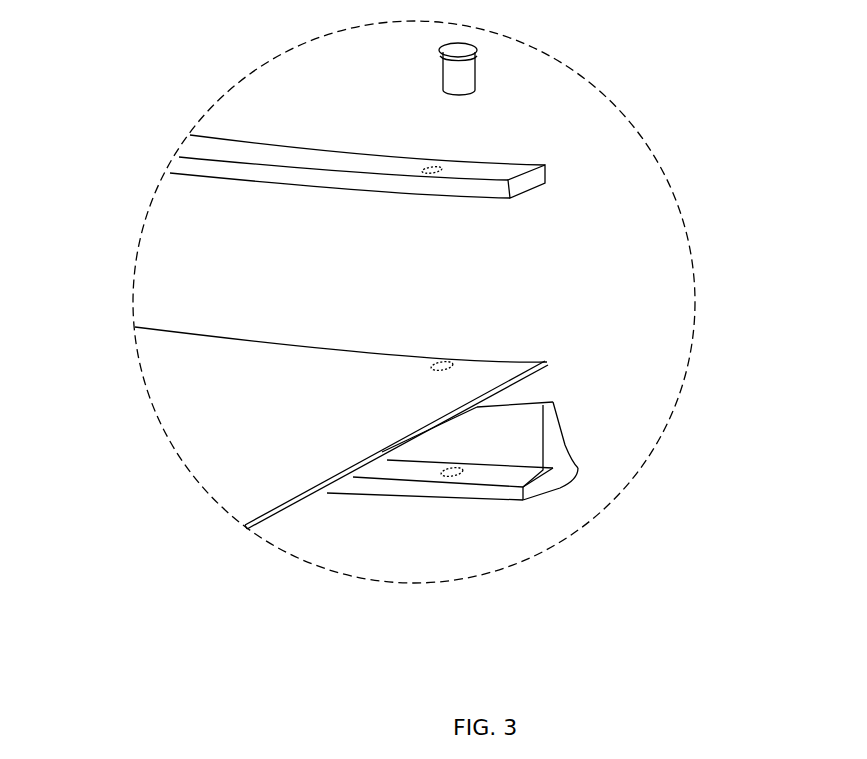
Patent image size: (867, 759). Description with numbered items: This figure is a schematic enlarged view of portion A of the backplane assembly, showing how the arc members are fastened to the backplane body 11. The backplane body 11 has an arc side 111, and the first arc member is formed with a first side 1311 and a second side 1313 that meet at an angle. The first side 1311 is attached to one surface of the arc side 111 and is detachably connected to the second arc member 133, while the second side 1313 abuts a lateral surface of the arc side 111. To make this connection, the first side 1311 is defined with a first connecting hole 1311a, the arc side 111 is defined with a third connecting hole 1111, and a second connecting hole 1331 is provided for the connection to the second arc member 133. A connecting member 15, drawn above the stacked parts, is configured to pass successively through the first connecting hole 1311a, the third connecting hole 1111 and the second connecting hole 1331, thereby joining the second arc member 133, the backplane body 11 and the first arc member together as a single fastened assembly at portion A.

The backplane body 11 is at (253, 472).
The arc side 111 is at (277, 352).
The third connecting hole 1111 is at (424, 362).
The first side 1311 is at (537, 495).
The first connecting hole 1311a is at (448, 490).
The second side 1313 is at (547, 440).
The second arc member 133 is at (510, 180).
The second connecting hole 1331 is at (447, 167).
The connecting member 15 is at (453, 80).
The portion A is at (670, 418).